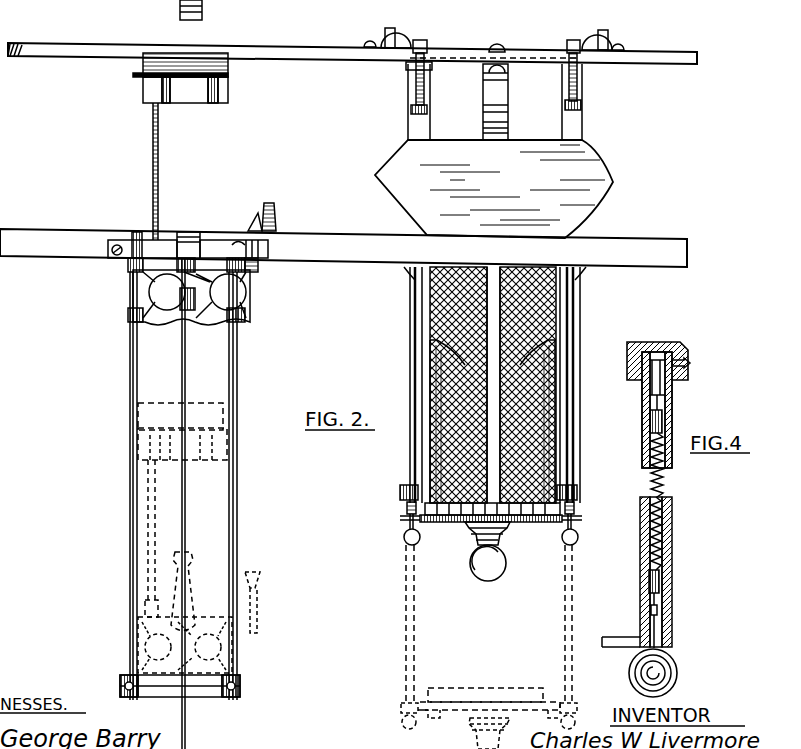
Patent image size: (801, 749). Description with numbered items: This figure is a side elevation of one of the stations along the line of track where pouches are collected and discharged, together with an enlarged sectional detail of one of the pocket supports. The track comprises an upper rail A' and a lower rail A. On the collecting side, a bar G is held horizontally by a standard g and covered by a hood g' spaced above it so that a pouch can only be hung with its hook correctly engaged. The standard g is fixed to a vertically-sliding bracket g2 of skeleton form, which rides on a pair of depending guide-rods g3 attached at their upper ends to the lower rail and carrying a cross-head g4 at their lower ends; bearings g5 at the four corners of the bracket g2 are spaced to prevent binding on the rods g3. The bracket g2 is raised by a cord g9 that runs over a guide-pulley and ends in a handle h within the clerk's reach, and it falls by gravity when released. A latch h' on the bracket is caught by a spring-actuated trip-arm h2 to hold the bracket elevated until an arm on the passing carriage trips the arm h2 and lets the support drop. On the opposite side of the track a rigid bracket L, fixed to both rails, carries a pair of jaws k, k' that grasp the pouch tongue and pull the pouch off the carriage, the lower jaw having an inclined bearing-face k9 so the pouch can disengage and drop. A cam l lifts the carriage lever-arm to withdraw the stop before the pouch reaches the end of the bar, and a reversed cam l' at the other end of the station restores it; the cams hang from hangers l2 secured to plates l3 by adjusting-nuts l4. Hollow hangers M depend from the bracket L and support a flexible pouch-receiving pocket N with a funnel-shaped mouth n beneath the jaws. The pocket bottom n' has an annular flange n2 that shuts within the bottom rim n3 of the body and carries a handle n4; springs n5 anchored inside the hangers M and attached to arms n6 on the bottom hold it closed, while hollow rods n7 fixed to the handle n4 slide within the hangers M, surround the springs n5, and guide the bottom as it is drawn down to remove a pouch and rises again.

In FIG. 2, the upper rail A' is at (352, 50).
In FIG. 2, the lower rail A is at (343, 248).
In FIG. 2, the bar G is at (140, 76).
In FIG. 2, the hood g' is at (180, 78).
In FIG. 2, the standard g is at (141, 171).
In FIG. 2, the vertically-sliding bracket g2 is at (148, 284).
In FIG. 2, the guide-rods g3 is at (130, 368).
In FIG. 2, the cross-head g4 is at (122, 684).
In FIG. 2, the bearings g5 is at (135, 264).
In FIG. 2, the cord g9 is at (193, 362).
In FIG. 2, the handle h is at (191, 591).
In FIG. 2, the latch h' is at (253, 418).
In FIG. 2, the spring-actuated trip-arm h2 is at (275, 215).
In FIG. 2, the bracket L is at (395, 30).
In FIG. 2, the cam l is at (480, 66).
In FIG. 2, the cam l' is at (559, 75).
In FIG. 2, the hangers l2 is at (424, 86).
In FIG. 2, the plates l3 is at (440, 58).
In FIG. 2, the adjusting-nuts l4 is at (428, 52).
In FIG. 2, the jaw k is at (505, 92).
In FIG. 2, the jaw k' is at (506, 124).
In FIG. 2, the inclined bearing-face k9 is at (483, 122).
In FIG. 2, the funnel-shaped mouth n is at (494, 189).
In FIG. 2, the hollow hangers M is at (495, 385).
In FIG. 2, the pouch-receiving pocket N is at (432, 386).
In FIG. 2, the bottom n' is at (491, 622).
In FIG. 2, the annular flange n2 is at (470, 700).
In FIG. 2, the bottom rim n3 is at (518, 514).
In FIG. 2, the handle n4 is at (489, 733).
In FIG. 2, the springs n5 is at (488, 563).
In FIG. 4, the springs n5 is at (660, 492).
In FIG. 2, the arms n6 is at (404, 532).
In FIG. 4, the hollow rods n7 is at (672, 540).